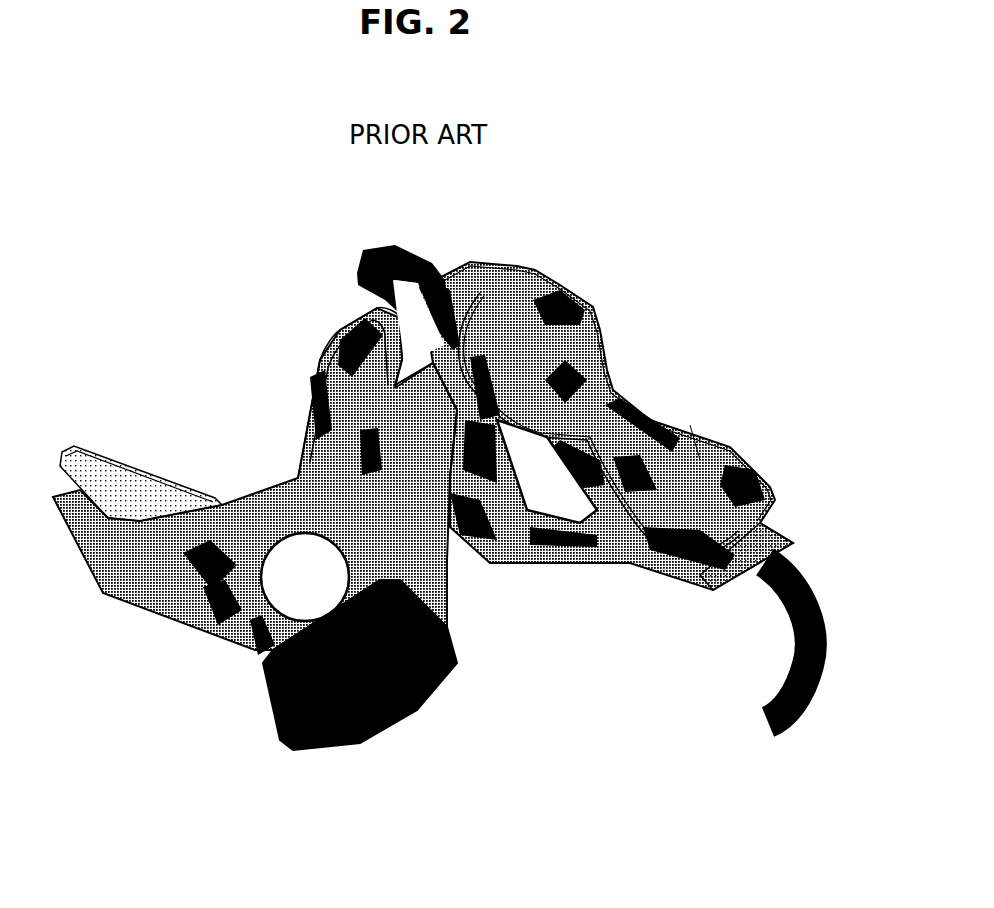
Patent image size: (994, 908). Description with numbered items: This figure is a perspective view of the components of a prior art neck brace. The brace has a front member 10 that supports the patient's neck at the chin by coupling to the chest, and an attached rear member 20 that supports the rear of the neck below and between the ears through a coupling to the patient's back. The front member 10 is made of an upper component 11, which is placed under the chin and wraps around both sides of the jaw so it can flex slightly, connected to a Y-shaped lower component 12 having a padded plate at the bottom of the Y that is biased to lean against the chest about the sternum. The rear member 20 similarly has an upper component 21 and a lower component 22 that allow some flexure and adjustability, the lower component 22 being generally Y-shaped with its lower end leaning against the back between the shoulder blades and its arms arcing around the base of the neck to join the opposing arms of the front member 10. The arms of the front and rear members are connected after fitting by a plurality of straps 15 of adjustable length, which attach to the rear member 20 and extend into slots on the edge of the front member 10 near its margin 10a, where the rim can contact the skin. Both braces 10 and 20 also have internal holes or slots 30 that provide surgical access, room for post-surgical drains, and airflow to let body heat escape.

The front member 10 is at (668, 416).
The brace margin 10a is at (702, 442).
The upper component 11 is at (605, 345).
The lower component 12 is at (708, 617).
The strap 15 is at (355, 268).
The rear member 20 is at (393, 728).
The upper component of rear member 21 is at (100, 467).
The lower component of rear member 22 is at (182, 570).
The holes or slots 30 is at (327, 567).